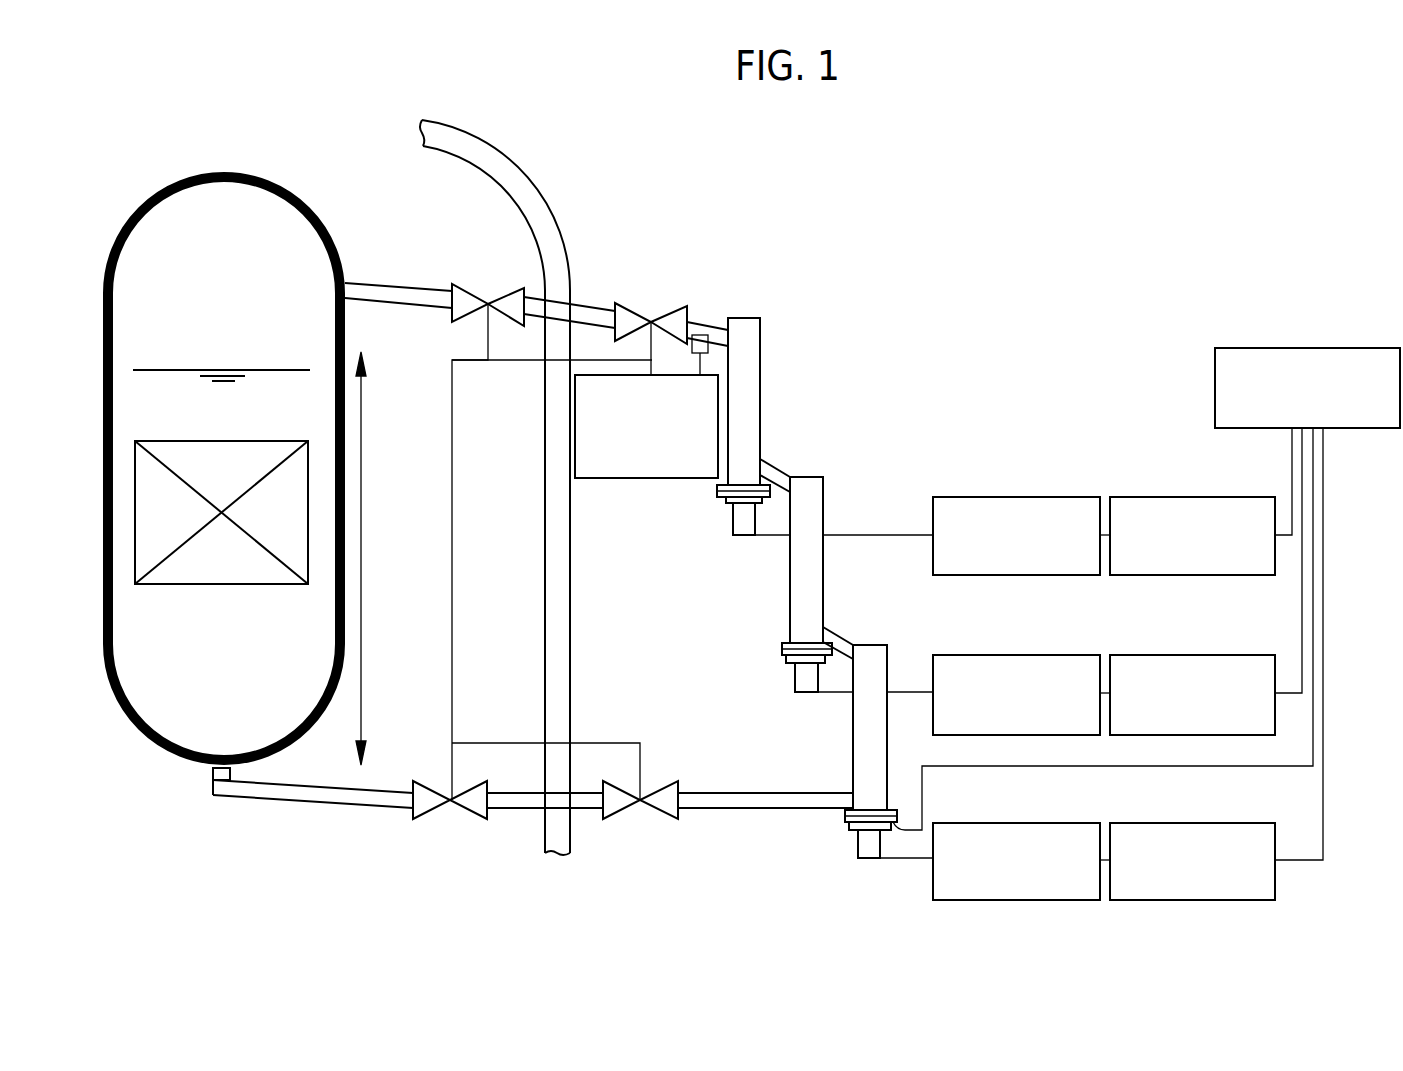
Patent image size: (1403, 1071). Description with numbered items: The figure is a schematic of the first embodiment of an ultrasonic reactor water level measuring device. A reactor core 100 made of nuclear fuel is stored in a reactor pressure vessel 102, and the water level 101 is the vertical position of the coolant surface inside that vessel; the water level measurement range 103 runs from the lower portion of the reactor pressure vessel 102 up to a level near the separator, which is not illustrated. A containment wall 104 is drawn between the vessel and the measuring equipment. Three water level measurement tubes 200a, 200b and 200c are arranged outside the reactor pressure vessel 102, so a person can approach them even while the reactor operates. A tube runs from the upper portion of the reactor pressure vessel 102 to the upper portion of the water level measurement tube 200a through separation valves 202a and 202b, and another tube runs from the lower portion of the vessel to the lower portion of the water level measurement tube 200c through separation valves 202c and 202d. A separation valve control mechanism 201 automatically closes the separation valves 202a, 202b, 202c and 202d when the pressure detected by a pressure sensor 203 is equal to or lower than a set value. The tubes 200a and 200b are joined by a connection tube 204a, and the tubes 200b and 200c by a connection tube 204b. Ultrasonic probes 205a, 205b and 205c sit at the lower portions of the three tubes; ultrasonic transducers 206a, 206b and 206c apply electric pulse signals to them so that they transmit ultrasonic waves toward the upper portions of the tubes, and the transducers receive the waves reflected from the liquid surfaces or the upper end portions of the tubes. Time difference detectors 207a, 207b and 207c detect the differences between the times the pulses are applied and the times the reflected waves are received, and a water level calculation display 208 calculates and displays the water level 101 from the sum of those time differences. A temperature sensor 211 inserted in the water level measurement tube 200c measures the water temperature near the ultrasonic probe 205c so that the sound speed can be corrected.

The reactor core 100 is at (156, 441).
The water level 101 is at (157, 370).
The reactor pressure vessel 102 is at (282, 178).
The water level measurement range 103 is at (363, 418).
The containment vessel wall 104 is at (450, 153).
The water level measurement tube 200a is at (761, 338).
The water level measurement tube 200b is at (824, 497).
The water level measurement tube 200c is at (888, 672).
The separation valve control mechanism 201 is at (636, 481).
The separation valve 202a is at (481, 292).
The separation valve 202b is at (636, 300).
The separation valve 202c is at (470, 824).
The separation valve 202d is at (660, 824).
The pressure sensor 203 is at (703, 334).
The connection tube 204a is at (782, 470).
The connection tube 204b is at (840, 630).
The ultrasonic probe 205a is at (738, 538).
The ultrasonic probe 205b is at (797, 697).
The ultrasonic probe 205c is at (862, 862).
The ultrasonic transducer 206a is at (1018, 497).
The ultrasonic transducer 206b is at (1018, 655).
The ultrasonic transducer 206c is at (1018, 823).
The time difference detector 207a is at (1195, 497).
The time difference detector 207b is at (1195, 655).
The time difference detector 207c is at (1195, 823).
The water level calculation display 208 is at (1311, 348).
The temperature sensor 211 is at (899, 807).